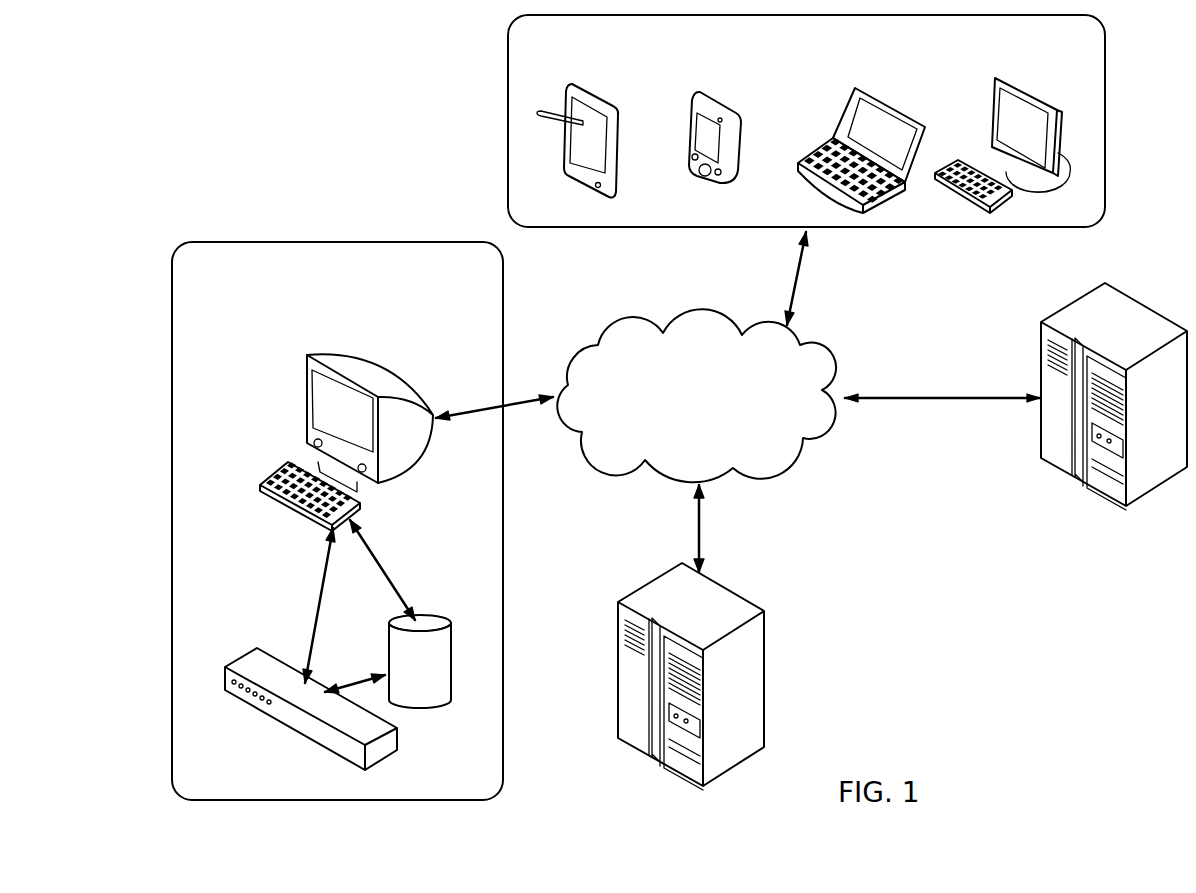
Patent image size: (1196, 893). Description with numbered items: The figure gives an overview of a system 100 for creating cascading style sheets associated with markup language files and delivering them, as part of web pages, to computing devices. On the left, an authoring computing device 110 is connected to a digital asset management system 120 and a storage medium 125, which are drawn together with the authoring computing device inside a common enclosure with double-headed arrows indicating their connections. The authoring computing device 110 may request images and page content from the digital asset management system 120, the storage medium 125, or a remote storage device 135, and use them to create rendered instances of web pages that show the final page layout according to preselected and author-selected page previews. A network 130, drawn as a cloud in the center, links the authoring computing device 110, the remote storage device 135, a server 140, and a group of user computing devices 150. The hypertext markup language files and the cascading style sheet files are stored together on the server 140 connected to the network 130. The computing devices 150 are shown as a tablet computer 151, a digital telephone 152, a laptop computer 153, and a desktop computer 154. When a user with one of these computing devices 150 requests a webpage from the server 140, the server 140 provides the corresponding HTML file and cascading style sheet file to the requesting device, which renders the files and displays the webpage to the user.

The system 100 is at (276, 118).
The authoring computing device 110 is at (300, 349).
The digital asset management system 120 is at (257, 640).
The storage medium 125 is at (460, 665).
The network 130 is at (683, 411).
The remote storage device 135 is at (674, 618).
The server 140 is at (1107, 336).
The computing devices 150 is at (553, 205).
The tablet computer 151 is at (544, 84).
The digital telephone 152 is at (680, 96).
The laptop computer 153 is at (831, 104).
The desktop computer 154 is at (967, 98).